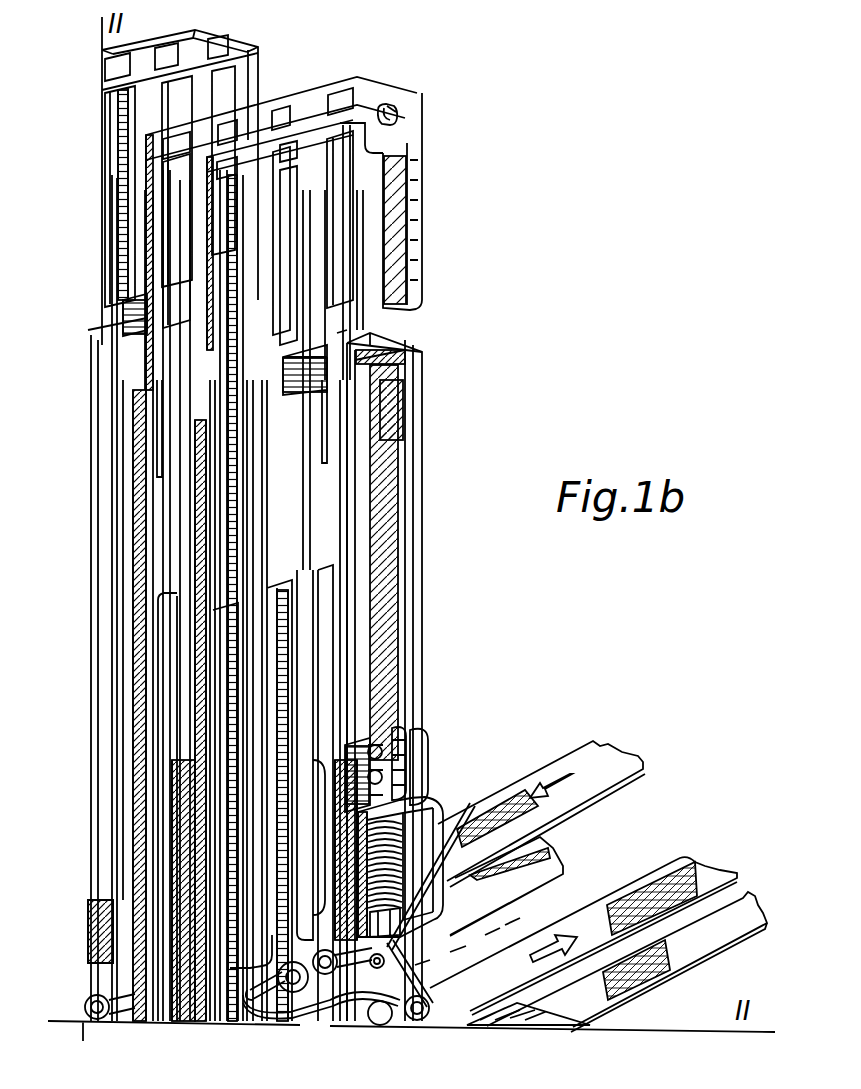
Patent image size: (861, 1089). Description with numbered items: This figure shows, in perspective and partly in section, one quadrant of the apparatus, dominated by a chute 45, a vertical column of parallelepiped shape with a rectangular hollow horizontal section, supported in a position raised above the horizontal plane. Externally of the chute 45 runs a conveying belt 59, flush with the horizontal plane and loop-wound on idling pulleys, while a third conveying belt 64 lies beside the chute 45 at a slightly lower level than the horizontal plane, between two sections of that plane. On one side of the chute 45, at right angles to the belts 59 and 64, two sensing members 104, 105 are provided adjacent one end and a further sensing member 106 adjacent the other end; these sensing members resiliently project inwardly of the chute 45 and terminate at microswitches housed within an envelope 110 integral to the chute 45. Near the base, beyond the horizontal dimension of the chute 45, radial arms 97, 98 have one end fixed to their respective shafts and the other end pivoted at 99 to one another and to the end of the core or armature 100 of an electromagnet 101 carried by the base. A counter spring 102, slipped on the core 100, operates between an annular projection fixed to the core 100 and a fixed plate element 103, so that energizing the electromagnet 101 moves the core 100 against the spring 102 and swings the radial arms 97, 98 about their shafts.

The chute 45 is at (420, 451).
The sensing member 106 is at (395, 108).
The sensing member 105 is at (372, 750).
The envelope 110 is at (405, 752).
The sensing member 104 is at (426, 762).
The electromagnet 101 is at (428, 812).
The counter spring 102 is at (458, 835).
The conveying belt 59 is at (598, 752).
The third conveying belt 64 is at (738, 908).
The radial arm 97 is at (402, 976).
The radial arm 98 is at (425, 967).
The pivot 99 is at (458, 955).
The core or armature 100 is at (492, 936).
The fixed plate element 103 is at (512, 925).